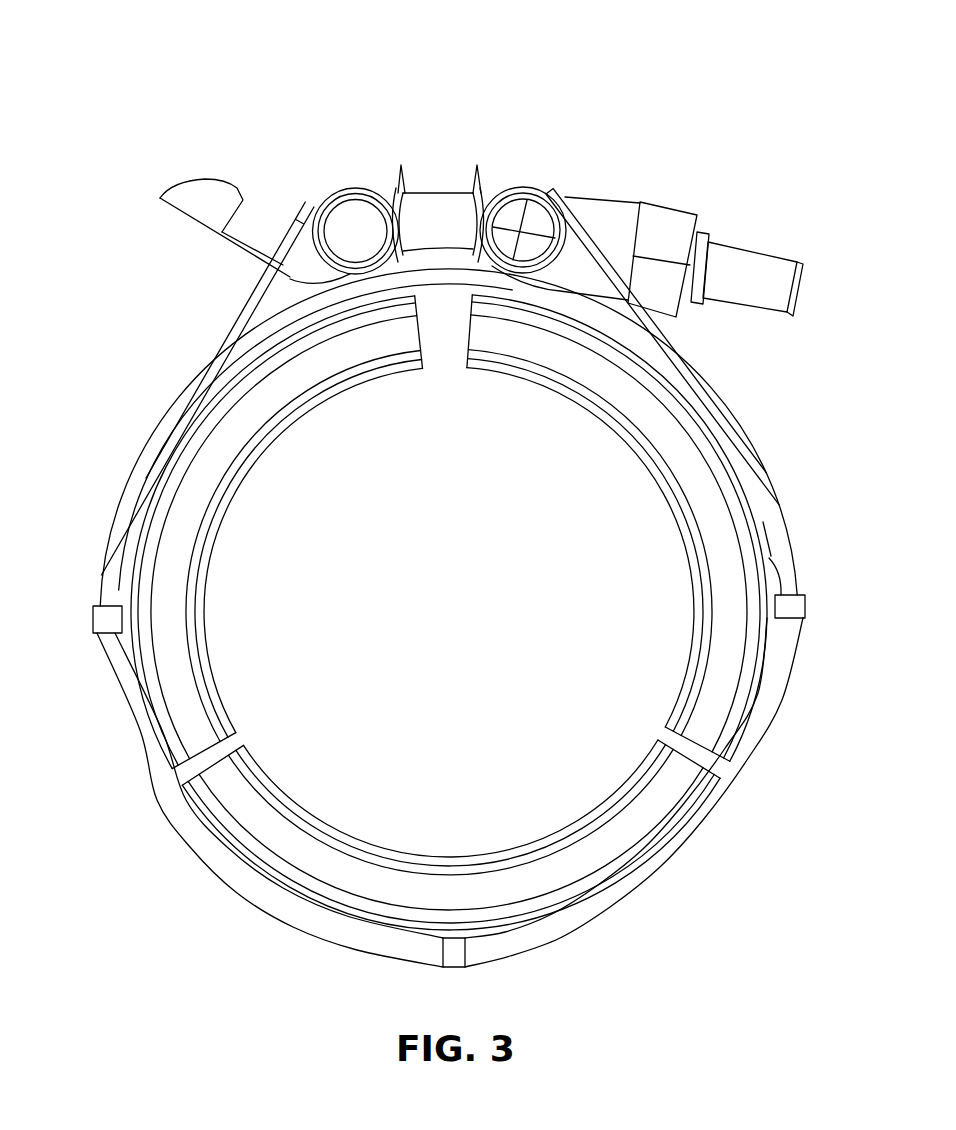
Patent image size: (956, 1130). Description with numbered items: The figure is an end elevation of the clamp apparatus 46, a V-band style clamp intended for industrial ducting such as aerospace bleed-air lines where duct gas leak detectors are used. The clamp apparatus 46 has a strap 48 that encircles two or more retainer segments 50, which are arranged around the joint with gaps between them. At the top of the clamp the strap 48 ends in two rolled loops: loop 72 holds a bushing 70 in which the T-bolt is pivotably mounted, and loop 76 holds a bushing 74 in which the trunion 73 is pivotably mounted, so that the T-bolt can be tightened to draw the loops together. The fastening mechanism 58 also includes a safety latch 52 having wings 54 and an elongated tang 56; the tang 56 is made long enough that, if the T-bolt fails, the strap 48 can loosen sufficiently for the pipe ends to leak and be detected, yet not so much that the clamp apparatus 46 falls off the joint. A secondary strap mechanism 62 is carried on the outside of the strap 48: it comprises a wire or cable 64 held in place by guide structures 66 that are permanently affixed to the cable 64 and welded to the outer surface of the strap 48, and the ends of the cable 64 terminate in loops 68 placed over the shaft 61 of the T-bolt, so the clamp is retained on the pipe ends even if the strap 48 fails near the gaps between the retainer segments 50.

The clamp apparatus 46 is at (247, 153).
The strap 48 is at (433, 612).
The retainer segments 50 is at (190, 548).
The safety latch 52 is at (192, 207).
The wings 54 is at (238, 255).
The elongated tang 56 is at (205, 186).
The fastening mechanism 58 is at (641, 165).
The shaft 61 is at (436, 201).
The secondary strap mechanism 62 is at (446, 593).
The wire or cable 64 is at (262, 883).
The guide structures 66 is at (797, 607).
The loops 68 is at (401, 180).
The bushing 70 is at (330, 211).
The loop 72 is at (345, 188).
The trunion 73 is at (635, 215).
The bushing 74 is at (545, 200).
The loop 76 is at (522, 205).